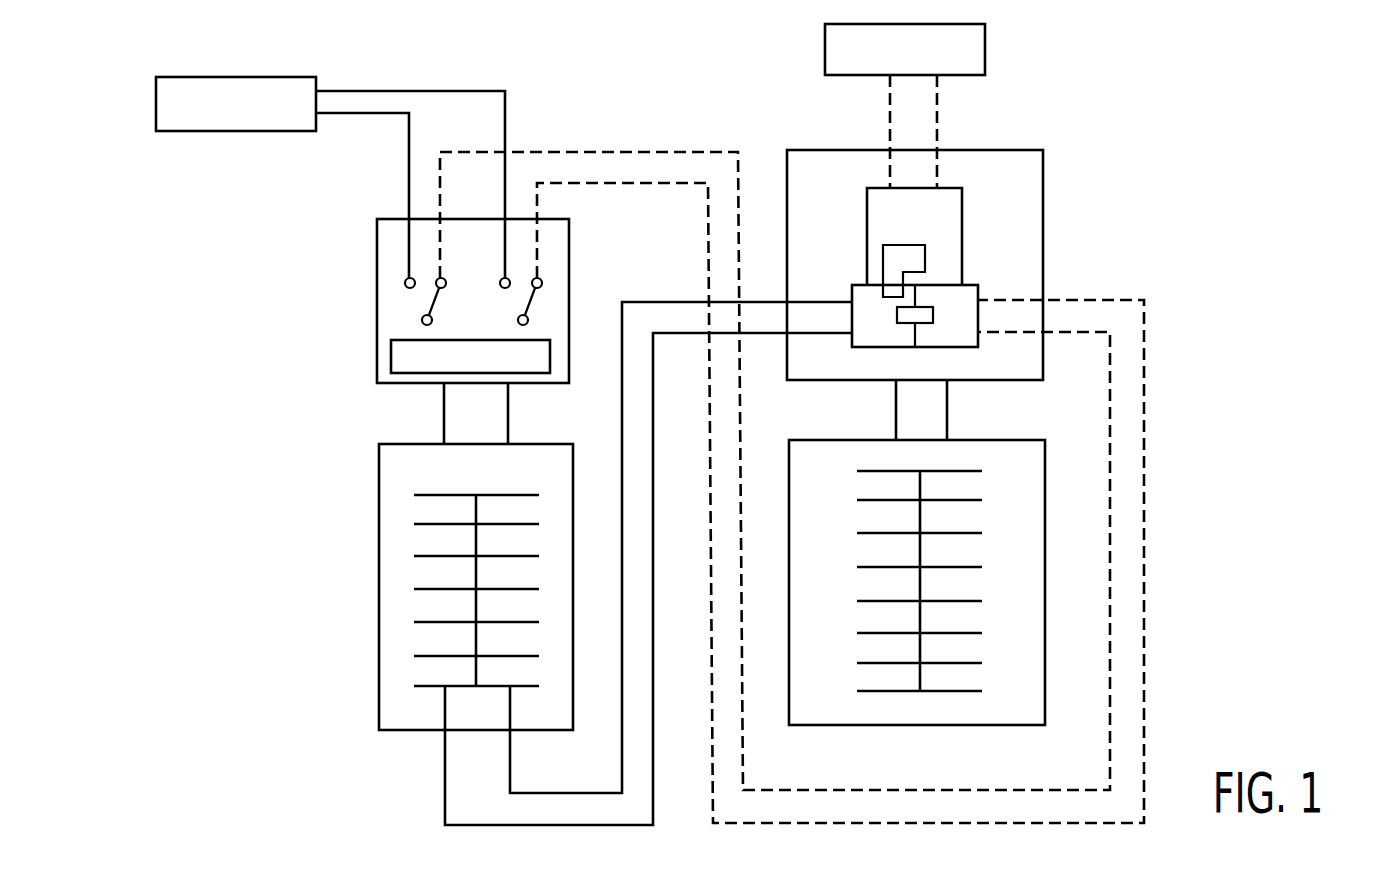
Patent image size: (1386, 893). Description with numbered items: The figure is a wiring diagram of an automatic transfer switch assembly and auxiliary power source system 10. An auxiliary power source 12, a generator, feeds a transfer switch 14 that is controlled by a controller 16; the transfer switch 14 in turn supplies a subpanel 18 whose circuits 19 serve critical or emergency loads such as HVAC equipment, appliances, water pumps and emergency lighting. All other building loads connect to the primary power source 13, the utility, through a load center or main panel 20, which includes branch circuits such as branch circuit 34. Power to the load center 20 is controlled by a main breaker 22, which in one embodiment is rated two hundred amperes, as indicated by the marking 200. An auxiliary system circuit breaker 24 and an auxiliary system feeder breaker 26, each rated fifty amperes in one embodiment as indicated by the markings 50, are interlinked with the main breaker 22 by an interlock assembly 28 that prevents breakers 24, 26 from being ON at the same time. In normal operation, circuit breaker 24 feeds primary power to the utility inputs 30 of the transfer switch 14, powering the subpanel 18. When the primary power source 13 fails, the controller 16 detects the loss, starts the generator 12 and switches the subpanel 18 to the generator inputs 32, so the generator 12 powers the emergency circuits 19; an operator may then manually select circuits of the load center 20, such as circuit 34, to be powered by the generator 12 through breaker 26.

The automatic transfer switch assembly and auxiliary power source system 10 is at (1160, 112).
The auxiliary power source 12 is at (233, 131).
The primary power source 13 is at (985, 52).
The transfer switch 14 is at (396, 316).
The controller 16 is at (391, 353).
The subpanel 18 is at (401, 566).
The circuits 19 is at (428, 590).
The load center 20 is at (1014, 479).
The main breaker 22 is at (952, 188).
The auxiliary system circuit breaker 24 is at (968, 292).
The auxiliary system feeder breaker 26 is at (859, 292).
The interlock assembly 28 is at (924, 252).
The utility inputs 30 is at (433, 266).
The generator inputs 32 is at (405, 291).
The branch circuit 34 is at (953, 601).
The 50 A breaker rating 50 is at (914, 318).
The 200 A breaker rating 200 is at (916, 219).